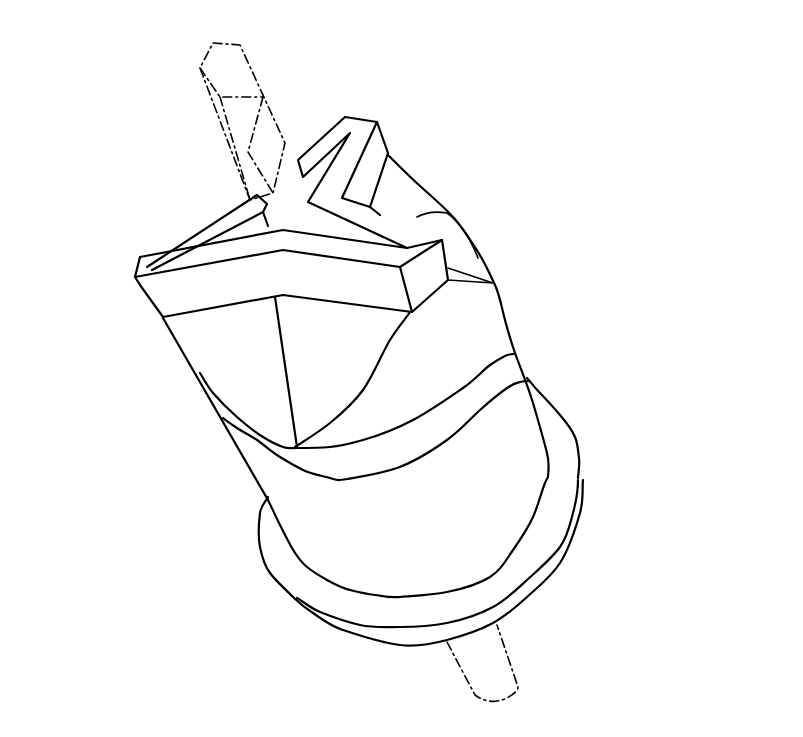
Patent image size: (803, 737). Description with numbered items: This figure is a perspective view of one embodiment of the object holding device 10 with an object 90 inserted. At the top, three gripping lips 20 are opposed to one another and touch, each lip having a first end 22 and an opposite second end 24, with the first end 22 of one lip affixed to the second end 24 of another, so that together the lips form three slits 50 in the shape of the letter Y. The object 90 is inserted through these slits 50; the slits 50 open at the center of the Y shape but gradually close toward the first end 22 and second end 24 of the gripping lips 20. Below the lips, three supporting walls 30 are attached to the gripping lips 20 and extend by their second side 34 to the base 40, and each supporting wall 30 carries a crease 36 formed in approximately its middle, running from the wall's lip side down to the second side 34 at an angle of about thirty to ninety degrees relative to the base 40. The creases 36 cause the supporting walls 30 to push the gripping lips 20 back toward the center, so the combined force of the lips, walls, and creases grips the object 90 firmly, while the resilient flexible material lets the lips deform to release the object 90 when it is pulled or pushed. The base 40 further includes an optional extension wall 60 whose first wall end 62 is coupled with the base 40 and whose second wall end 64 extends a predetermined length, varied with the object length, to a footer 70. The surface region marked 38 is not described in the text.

The object holding device 10 is at (293, 62).
The gripping lips 20 is at (192, 241).
The first end 22 is at (140, 257).
The second end 24 is at (137, 287).
The supporting walls 30 is at (277, 383).
The second side 34 is at (470, 257).
The crease 36 is at (230, 374).
The body 38 is at (447, 343).
The base 40 is at (505, 365).
The slits 50 is at (242, 232).
The extension wall 60 is at (523, 420).
The first wall end 62 is at (513, 390).
The second wall end 64 is at (547, 475).
The footer 70 is at (543, 540).
The object 90 is at (205, 73).